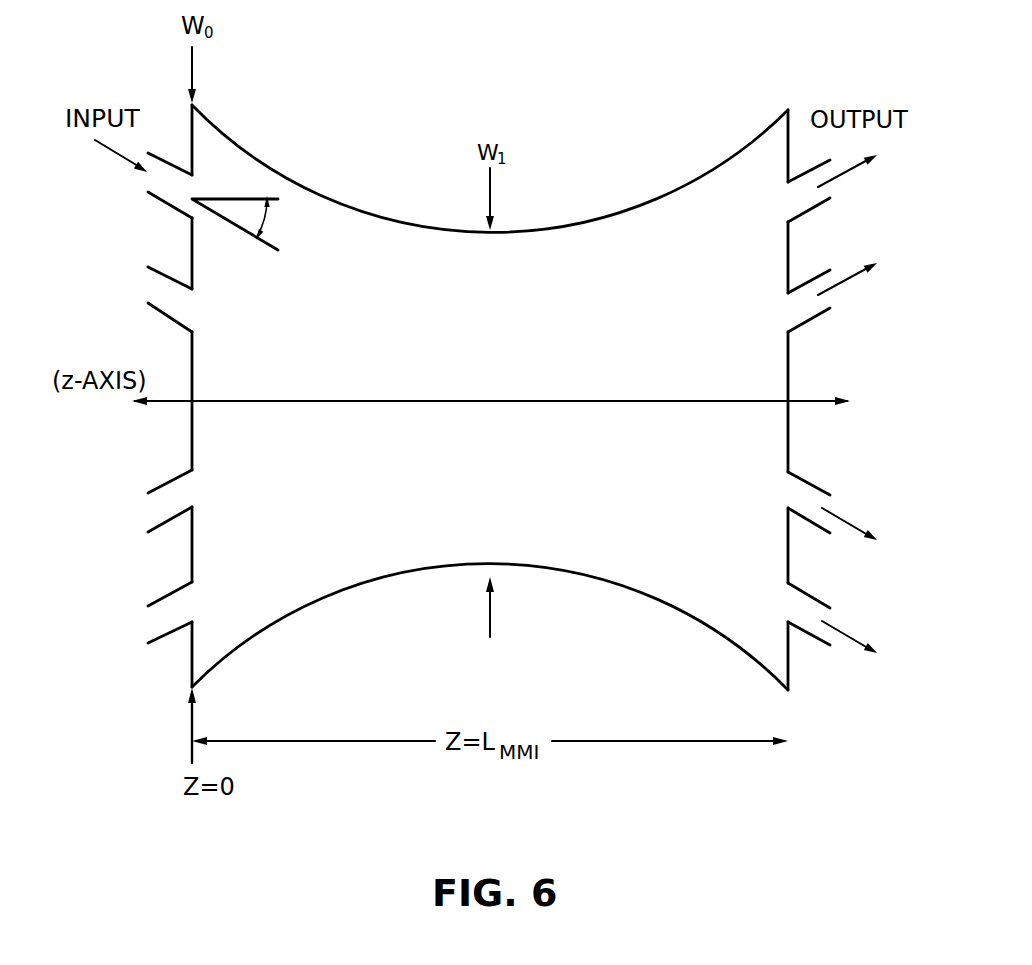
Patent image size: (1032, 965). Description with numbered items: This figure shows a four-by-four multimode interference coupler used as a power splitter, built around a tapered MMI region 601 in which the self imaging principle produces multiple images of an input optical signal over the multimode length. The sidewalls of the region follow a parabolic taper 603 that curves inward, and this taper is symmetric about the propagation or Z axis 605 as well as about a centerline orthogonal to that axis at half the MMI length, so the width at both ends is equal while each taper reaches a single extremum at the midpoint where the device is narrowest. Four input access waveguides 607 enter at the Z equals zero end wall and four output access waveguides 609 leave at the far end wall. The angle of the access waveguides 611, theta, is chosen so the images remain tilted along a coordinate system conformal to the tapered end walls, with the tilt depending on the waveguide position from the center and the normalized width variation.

The MMI region 601 is at (517, 465).
The parabolic taper 603 is at (615, 212).
The Z axis 605 is at (345, 396).
The input access waveguides 607 is at (153, 297).
The output access waveguides 609 is at (808, 280).
The angle of the access waveguides 611 is at (232, 198).